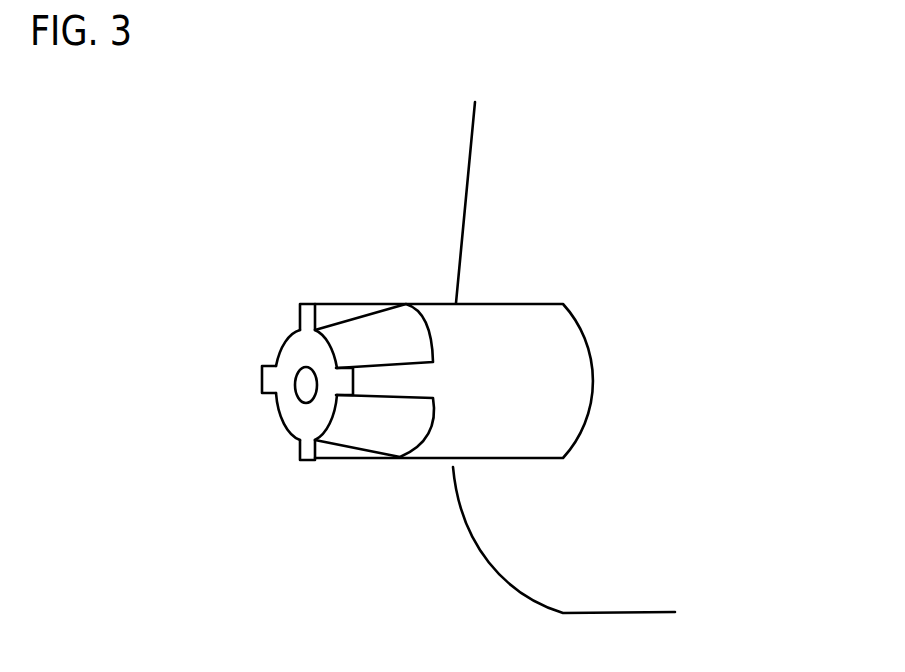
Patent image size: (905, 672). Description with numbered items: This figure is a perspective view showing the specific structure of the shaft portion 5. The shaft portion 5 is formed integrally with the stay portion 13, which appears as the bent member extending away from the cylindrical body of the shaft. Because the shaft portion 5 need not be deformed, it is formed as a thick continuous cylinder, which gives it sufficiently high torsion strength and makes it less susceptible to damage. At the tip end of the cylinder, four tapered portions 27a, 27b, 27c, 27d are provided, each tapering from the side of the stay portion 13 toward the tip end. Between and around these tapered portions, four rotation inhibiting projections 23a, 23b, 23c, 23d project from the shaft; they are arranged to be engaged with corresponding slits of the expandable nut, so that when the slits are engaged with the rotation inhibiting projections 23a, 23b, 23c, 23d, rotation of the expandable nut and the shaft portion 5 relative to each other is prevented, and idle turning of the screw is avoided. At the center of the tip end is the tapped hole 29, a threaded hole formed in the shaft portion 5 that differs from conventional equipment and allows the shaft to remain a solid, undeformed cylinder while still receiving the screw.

The shaft portion 5 is at (237, 238).
The stay portion 13 is at (672, 541).
The rotation inhibiting projection 23a is at (316, 297).
The rotation inhibiting projection 23b is at (258, 382).
The rotation inhibiting projection 23c is at (305, 465).
The rotation inhibiting projection 23d is at (397, 378).
The tapered portion 27a is at (277, 345).
The tapered portion 27b is at (273, 428).
The tapered portion 27c is at (367, 434).
The tapered portion 27d is at (400, 327).
The tapped hole 29 is at (302, 380).